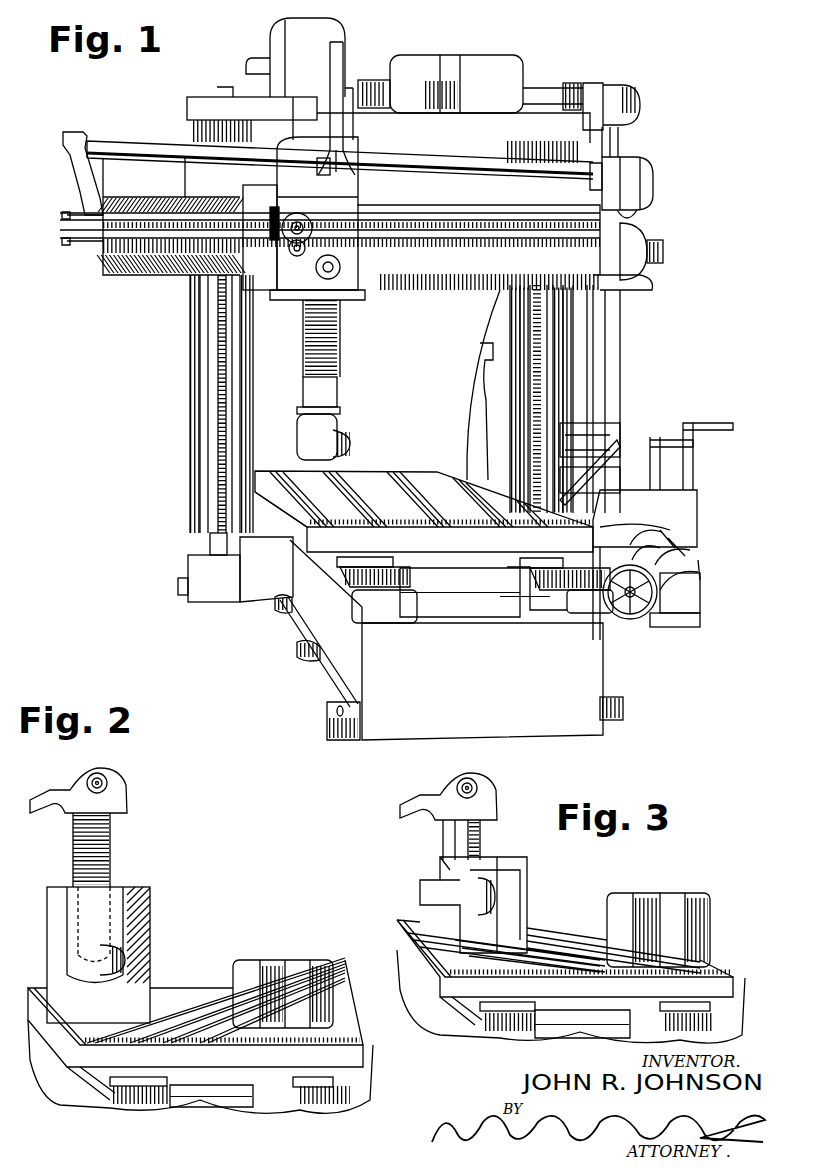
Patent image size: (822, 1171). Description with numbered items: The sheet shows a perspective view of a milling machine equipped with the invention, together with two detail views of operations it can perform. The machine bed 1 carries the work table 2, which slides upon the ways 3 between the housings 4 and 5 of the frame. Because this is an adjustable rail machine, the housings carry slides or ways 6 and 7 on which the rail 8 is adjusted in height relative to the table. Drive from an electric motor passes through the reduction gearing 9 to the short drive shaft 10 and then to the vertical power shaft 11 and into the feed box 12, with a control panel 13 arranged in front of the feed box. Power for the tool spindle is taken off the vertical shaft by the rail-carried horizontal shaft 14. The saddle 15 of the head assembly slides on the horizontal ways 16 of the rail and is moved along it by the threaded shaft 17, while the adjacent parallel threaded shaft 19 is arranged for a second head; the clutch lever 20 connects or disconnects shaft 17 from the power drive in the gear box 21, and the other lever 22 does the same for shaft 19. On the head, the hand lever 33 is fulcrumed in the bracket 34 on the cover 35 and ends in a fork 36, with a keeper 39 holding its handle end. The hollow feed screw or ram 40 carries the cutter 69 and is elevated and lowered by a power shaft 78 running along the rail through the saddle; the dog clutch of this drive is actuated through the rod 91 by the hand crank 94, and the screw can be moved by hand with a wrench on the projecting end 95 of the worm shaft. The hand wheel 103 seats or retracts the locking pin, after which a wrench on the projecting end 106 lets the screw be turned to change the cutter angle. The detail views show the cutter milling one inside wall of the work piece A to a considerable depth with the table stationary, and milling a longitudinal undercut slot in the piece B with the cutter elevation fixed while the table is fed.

In FIG. 1, the machine bed 1 is at (475, 699).
In FIG. 1, the work table 2 is at (456, 557).
In FIG. 2, the work table 2 is at (226, 1077).
In FIG. 3, the work table 2 is at (602, 1011).
In FIG. 1, the ways 3 is at (362, 578).
In FIG. 2, the ways 3 is at (158, 1103).
In FIG. 3, the ways 3 is at (513, 1027).
In FIG. 1, the housing 4 is at (226, 333).
In FIG. 2, the housing 5 is at (245, 975).
In FIG. 3, the housing 5 is at (617, 918).
In FIG. 1, the slide or way 6 is at (240, 360).
In FIG. 1, the slide or way 7 is at (518, 387).
In FIG. 1, the rail 8 is at (440, 300).
In FIG. 1, the reduction gearing 9 is at (428, 68).
In FIG. 1, the short drive shaft 10 is at (550, 97).
In FIG. 1, the vertical power shaft 11 is at (607, 385).
In FIG. 1, the feed box 12 is at (592, 497).
In FIG. 1, the control panel 13 is at (678, 503).
In FIG. 1, the horizontal shaft 14 is at (505, 180).
In FIG. 1, the saddle 15 is at (252, 205).
In FIG. 1, the horizontal ways 16 is at (428, 225).
In FIG. 1, the threaded shaft 17 is at (505, 240).
In FIG. 1, the parallel threaded shaft 19 is at (470, 300).
In FIG. 1, the clutch lever 20 is at (665, 250).
In FIG. 1, the gear box 21 is at (648, 237).
In FIG. 1, the lever 22 is at (655, 283).
In FIG. 1, the hand lever 33 is at (318, 116).
In FIG. 1, the bracket 34 is at (345, 62).
In FIG. 1, the cover 35 is at (305, 100).
In FIG. 1, the fork 36 is at (300, 58).
In FIG. 1, the keeper 39 is at (317, 165).
In FIG. 1, the hollow feed screw or ram 40 is at (335, 332).
In FIG. 2, the hollow feed screw or ram 40 is at (110, 840).
In FIG. 3, the hollow feed screw or ram 40 is at (452, 838).
In FIG. 1, the cutter 69 is at (352, 450).
In FIG. 2, the cutter 69 is at (118, 958).
In FIG. 3, the cutter 69 is at (492, 897).
In FIG. 1, the power shaft 78 is at (478, 290).
In FIG. 1, the rod 91 is at (322, 235).
In FIG. 1, the hand crank 94 is at (370, 296).
In FIG. 1, the projecting end of worm shaft 95 is at (313, 227).
In FIG. 1, the hand wheel 103 is at (300, 302).
In FIG. 1, the projecting end of shaft 106 is at (294, 272).
In FIG. 2, the work piece A is at (150, 890).
In FIG. 3, the work piece B is at (425, 890).